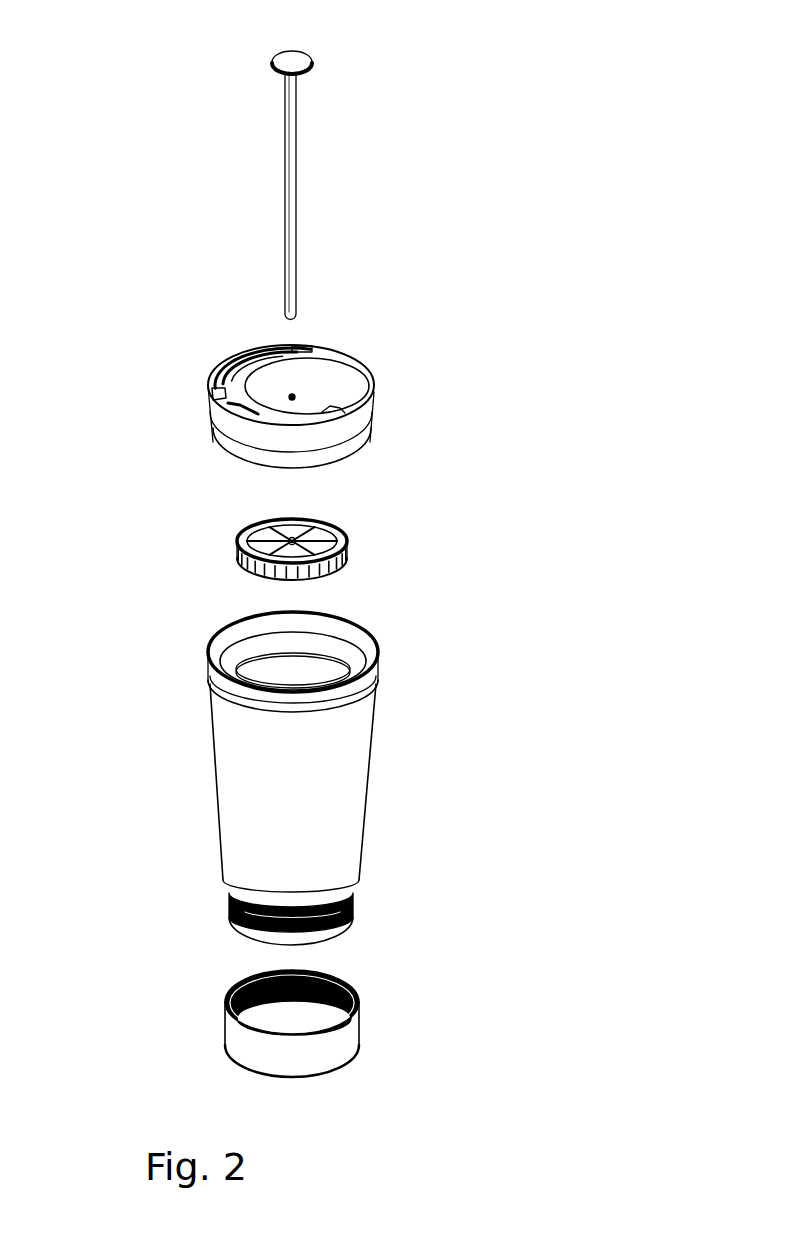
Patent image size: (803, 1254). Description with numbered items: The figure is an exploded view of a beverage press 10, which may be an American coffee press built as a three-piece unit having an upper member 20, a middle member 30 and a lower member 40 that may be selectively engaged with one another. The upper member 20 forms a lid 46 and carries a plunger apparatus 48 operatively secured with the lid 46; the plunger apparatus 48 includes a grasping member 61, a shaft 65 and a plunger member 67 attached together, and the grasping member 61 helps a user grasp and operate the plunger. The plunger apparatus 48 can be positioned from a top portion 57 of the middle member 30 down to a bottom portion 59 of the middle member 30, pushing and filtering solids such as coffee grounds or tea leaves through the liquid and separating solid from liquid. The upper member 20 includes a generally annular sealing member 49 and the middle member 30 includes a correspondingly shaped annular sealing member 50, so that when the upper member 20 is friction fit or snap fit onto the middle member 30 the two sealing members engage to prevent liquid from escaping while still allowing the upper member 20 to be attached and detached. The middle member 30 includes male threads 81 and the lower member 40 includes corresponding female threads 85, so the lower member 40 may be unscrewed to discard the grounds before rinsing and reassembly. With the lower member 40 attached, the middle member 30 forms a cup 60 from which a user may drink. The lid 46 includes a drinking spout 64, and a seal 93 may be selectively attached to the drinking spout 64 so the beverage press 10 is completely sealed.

The beverage press 10 is at (356, 538).
The upper member 20 is at (301, 408).
The middle member 30 is at (298, 772).
The lower member 40 is at (350, 1002).
The lid 46 is at (342, 375).
The plunger apparatus 48 is at (341, 160).
The annular sealing member 49 is at (240, 447).
The annular sealing member 50 is at (343, 647).
The top portion 57 is at (208, 678).
The bottom portion 59 is at (360, 878).
The cup 60 is at (360, 812).
The grasping member 61 is at (302, 60).
The drinking spout 64 is at (212, 365).
The shaft 65 is at (288, 255).
The plunger member 67 is at (360, 530).
The male threads 81 is at (232, 913).
The female threads 85 is at (338, 982).
The seal 93 is at (212, 395).